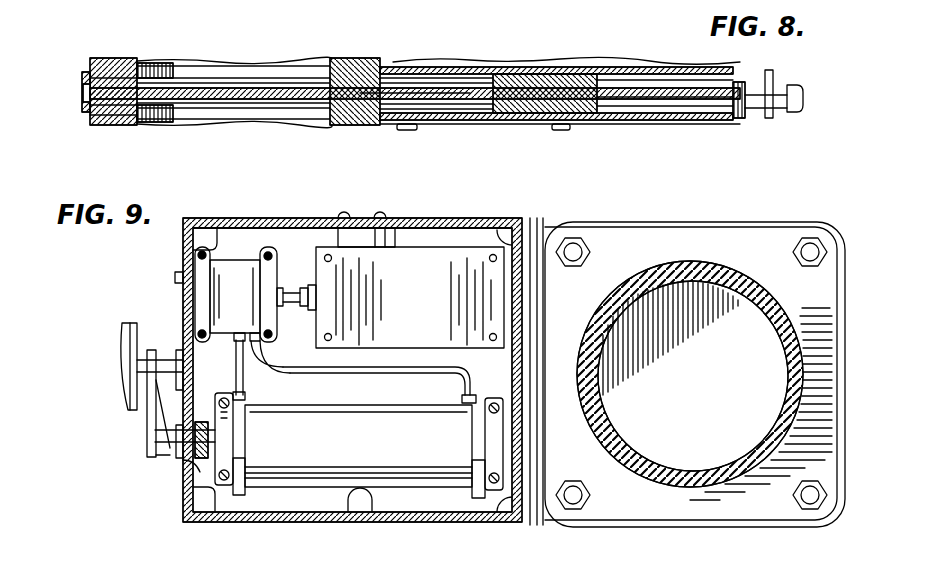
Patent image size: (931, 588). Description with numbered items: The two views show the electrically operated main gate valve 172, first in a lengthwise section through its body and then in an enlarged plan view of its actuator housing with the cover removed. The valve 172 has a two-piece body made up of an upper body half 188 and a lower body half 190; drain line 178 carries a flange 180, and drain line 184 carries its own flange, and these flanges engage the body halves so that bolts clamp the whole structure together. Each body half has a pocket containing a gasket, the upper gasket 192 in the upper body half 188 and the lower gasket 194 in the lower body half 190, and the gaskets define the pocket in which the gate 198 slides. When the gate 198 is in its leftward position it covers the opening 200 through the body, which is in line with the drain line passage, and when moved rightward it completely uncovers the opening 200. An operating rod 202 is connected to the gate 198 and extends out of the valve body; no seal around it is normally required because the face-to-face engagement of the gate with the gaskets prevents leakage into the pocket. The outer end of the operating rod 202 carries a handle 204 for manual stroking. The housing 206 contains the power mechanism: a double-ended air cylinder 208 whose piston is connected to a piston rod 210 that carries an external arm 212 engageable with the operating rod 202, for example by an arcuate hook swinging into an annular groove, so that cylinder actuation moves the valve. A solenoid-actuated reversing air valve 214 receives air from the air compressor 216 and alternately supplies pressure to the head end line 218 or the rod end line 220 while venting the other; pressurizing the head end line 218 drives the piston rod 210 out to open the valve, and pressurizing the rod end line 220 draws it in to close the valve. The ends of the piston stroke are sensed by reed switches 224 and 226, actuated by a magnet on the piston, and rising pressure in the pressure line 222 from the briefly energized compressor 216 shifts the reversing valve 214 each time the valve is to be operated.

In FIG. 8, the valve 172 is at (456, 61).
In FIG. 9, the valve 172 is at (546, 213).
In FIG. 9, the drain line 178 is at (798, 367).
In FIG. 8, the flange 180 is at (124, 58).
In FIG. 9, the flange 180 is at (727, 240).
In FIG. 8, the drain line 184 is at (117, 125).
In FIG. 8, the upper body half 188 is at (83, 80).
In FIG. 9, the upper body half 188 is at (648, 222).
In FIG. 8, the lower body half 190 is at (83, 96).
In FIG. 8, the upper gasket 192 is at (150, 63).
In FIG. 8, the lower gasket 194 is at (130, 120).
In FIG. 8, the gate 198 is at (237, 88).
In FIG. 9, the gate 198 is at (704, 425).
In FIG. 8, the opening 200 is at (335, 127).
In FIG. 8, the operating rod 202 is at (683, 109).
In FIG. 9, the operating rod 202 is at (178, 355).
In FIG. 8, the handle 204 is at (800, 112).
In FIG. 9, the handle 204 is at (123, 347).
In FIG. 8, the housing 206 is at (636, 68).
In FIG. 9, the housing 206 is at (453, 223).
In FIG. 9, the double-ended air cylinder 208 is at (328, 466).
In FIG. 9, the piston rod 210 is at (185, 473).
In FIG. 8, the external arm 212 is at (773, 78).
In FIG. 9, the external arm 212 is at (148, 420).
In FIG. 9, the reversing air valve 214 is at (238, 266).
In FIG. 9, the air compressor 216 is at (410, 250).
In FIG. 9, the head end line 218 is at (447, 376).
In FIG. 9, the rod end line 220 is at (243, 375).
In FIG. 9, the pressure line 222 is at (289, 285).
In FIG. 9, the reed switch 224 is at (238, 492).
In FIG. 9, the reed switch 226 is at (478, 494).